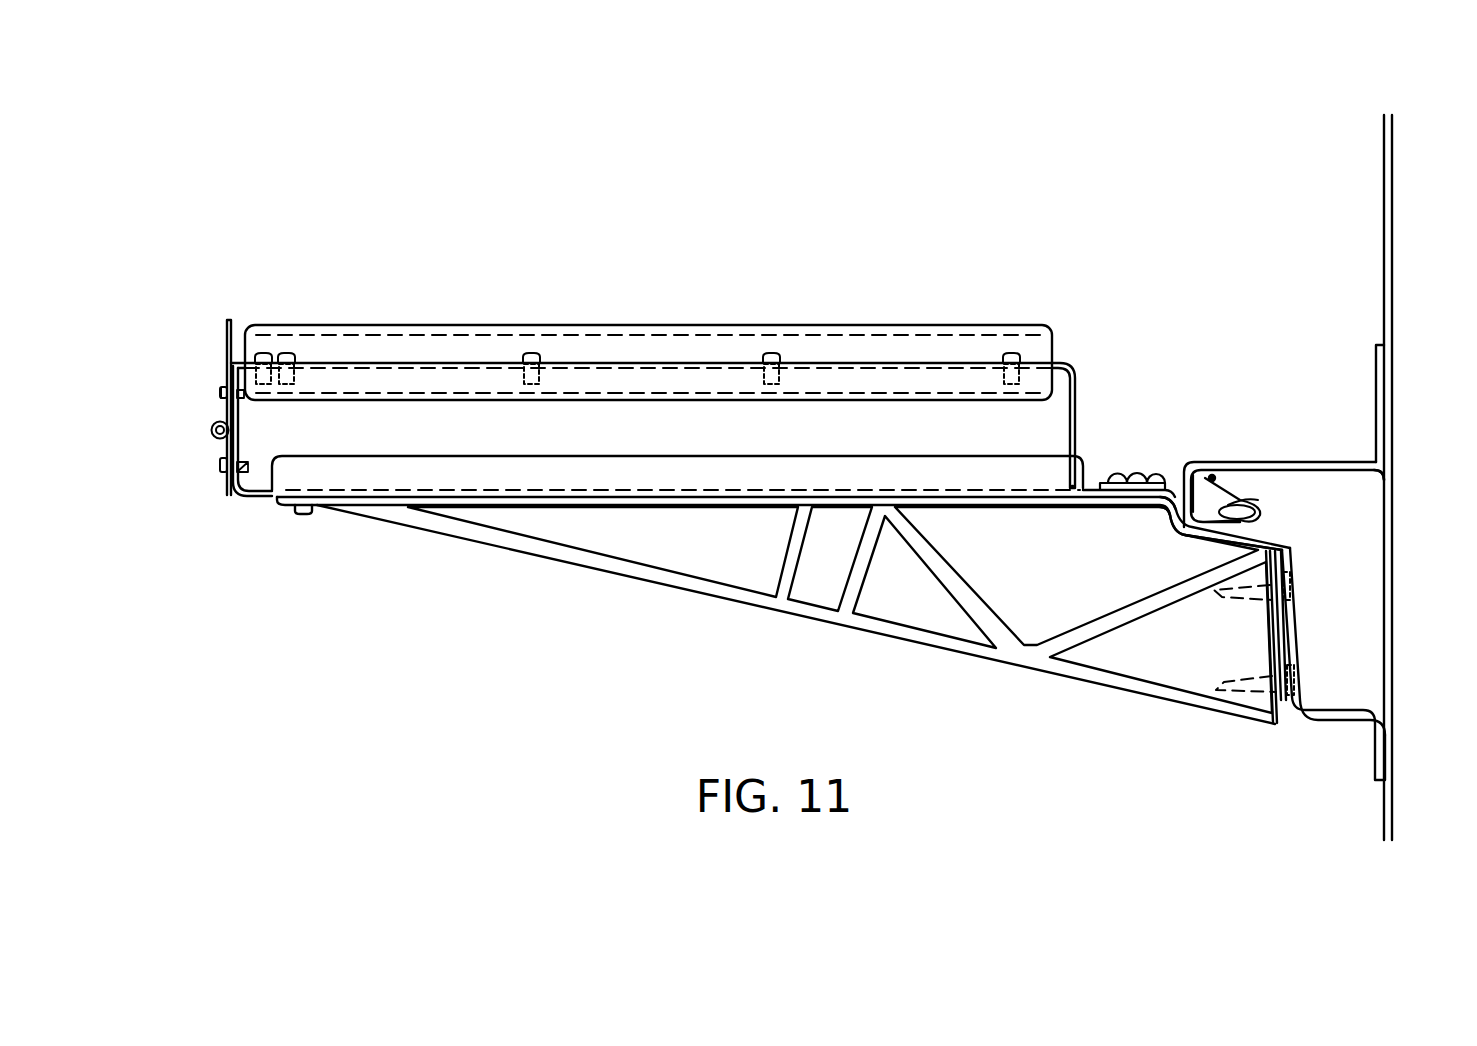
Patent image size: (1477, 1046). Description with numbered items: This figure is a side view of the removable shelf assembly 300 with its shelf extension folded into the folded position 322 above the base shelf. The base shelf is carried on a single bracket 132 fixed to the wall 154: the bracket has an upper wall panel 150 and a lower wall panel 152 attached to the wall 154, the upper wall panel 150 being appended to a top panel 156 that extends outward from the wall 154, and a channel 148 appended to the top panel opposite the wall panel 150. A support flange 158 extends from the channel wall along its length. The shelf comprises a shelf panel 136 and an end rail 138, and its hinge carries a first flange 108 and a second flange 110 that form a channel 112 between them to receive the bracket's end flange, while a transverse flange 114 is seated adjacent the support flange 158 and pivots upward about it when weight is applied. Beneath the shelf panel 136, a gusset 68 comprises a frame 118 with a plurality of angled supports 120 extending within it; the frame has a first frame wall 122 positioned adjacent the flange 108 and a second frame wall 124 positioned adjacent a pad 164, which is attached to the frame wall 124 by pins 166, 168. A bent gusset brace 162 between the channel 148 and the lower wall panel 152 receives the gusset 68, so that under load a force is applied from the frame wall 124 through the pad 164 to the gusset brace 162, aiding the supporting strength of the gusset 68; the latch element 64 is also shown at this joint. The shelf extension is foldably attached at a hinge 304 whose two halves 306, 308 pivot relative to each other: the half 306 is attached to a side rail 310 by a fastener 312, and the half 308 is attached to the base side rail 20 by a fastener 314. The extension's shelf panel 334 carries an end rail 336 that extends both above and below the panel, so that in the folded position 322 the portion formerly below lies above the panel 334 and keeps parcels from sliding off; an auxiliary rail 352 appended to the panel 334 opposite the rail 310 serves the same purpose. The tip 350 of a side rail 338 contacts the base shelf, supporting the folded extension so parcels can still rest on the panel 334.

The side rail 20 is at (238, 432).
The latch member 64 is at (1216, 500).
The gusset 68 is at (859, 616).
The first flange 108 is at (1170, 530).
The flange 110 is at (1195, 540).
The channel 112 is at (1192, 478).
The flange 114 is at (1250, 500).
The frame 118 is at (914, 582).
The angled supports 120 is at (956, 582).
The first frame wall 122 is at (1098, 514).
The second frame wall 124 is at (1268, 655).
The bracket 132 is at (1309, 634).
The shelf panel 136 is at (488, 490).
The end rail 138 is at (718, 463).
The channel 148 is at (1212, 476).
The wall panel 150 is at (1375, 375).
The wall panel 152 is at (1375, 752).
The wall 154 is at (1375, 182).
The top panel 156 is at (1372, 462).
The support flange 158 is at (1250, 462).
The gusset brace 162 is at (1300, 618).
The pad 164 is at (1283, 620).
The pin 166 is at (1248, 680).
The pin 168 is at (1228, 598).
The removable shelf assembly 300 is at (394, 228).
The hinge 304 is at (194, 426).
The hinge half 306 is at (230, 378).
The hinge half 308 is at (226, 488).
The side rail 310 is at (226, 410).
The fastener 312 is at (262, 412).
The fastener 314 is at (280, 456).
The folded position 322 is at (1008, 217).
The shelf panel 334 is at (388, 360).
The end rail 336 is at (606, 325).
The side rail 338 is at (1078, 420).
The tip 350 is at (1092, 490).
The auxiliary rail 352 is at (228, 322).